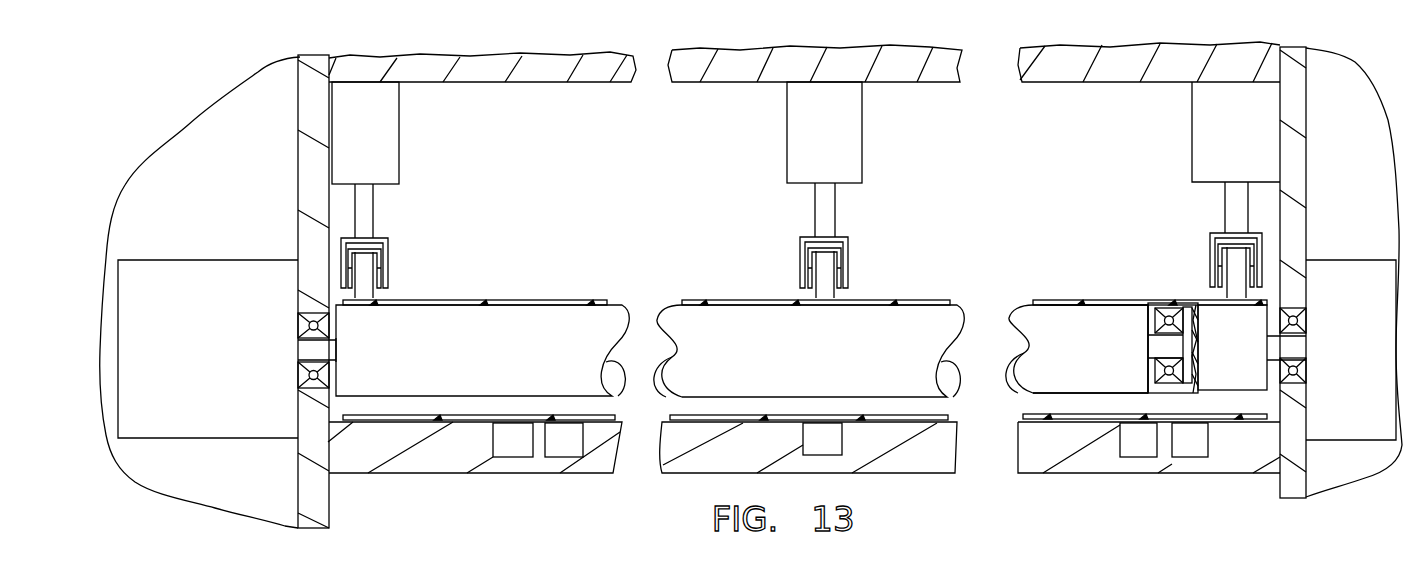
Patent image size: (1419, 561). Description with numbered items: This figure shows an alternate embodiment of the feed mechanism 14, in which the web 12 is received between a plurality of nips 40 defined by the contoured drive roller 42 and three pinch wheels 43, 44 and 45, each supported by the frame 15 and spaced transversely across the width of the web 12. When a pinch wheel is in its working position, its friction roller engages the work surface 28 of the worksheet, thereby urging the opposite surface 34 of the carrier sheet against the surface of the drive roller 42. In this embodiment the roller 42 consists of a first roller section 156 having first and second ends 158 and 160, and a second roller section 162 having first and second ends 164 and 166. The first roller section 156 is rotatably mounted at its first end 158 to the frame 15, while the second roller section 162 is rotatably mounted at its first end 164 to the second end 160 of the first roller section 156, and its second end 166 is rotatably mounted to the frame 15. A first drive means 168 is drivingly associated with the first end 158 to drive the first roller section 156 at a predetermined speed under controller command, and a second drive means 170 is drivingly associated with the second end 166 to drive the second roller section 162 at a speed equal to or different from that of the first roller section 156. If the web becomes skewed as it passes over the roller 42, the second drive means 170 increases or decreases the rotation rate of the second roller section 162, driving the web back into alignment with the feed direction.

The web 12 is at (1064, 322).
The feed mechanism 14 is at (660, 487).
The frame 15 is at (538, 66).
The work surface 28 is at (1097, 298).
The opposite surface 34 is at (1097, 304).
The nips 40 is at (393, 298).
The drive roller 42 is at (563, 318).
The pinch wheel 43 is at (405, 250).
The pinch wheel 44 is at (790, 262).
The pinch wheel 45 is at (1200, 240).
The first roller section 156 is at (1033, 375).
The first end of first roller section 158 is at (358, 380).
The second end of first roller section 160 is at (1125, 383).
The second roller section 162 is at (1215, 373).
The first end of second roller section 164 is at (1180, 390).
The second end of second roller section 166 is at (1257, 383).
The first drive means 168 is at (205, 272).
The second drive means 170 is at (1333, 405).